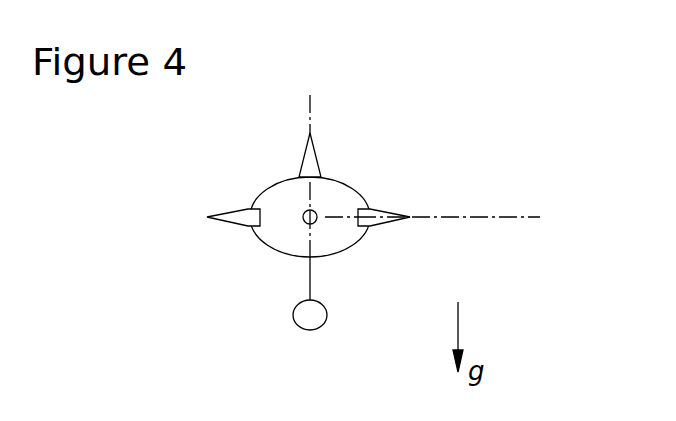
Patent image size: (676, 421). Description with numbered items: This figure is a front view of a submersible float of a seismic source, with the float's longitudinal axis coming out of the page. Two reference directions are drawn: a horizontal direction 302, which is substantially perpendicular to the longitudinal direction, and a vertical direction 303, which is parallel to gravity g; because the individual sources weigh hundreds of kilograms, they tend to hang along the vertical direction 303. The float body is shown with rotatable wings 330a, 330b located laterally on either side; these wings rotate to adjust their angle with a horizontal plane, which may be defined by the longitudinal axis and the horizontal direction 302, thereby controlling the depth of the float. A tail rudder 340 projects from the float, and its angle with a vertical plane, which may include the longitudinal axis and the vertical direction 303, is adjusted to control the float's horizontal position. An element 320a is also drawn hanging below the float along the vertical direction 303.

The vertical direction 303 is at (311, 110).
The horizontal direction 302 is at (520, 218).
The tail rudder 340 is at (316, 155).
The rotatable wing 330a is at (390, 213).
The rotatable wing 330b is at (232, 214).
The pendant weight 320a is at (303, 330).